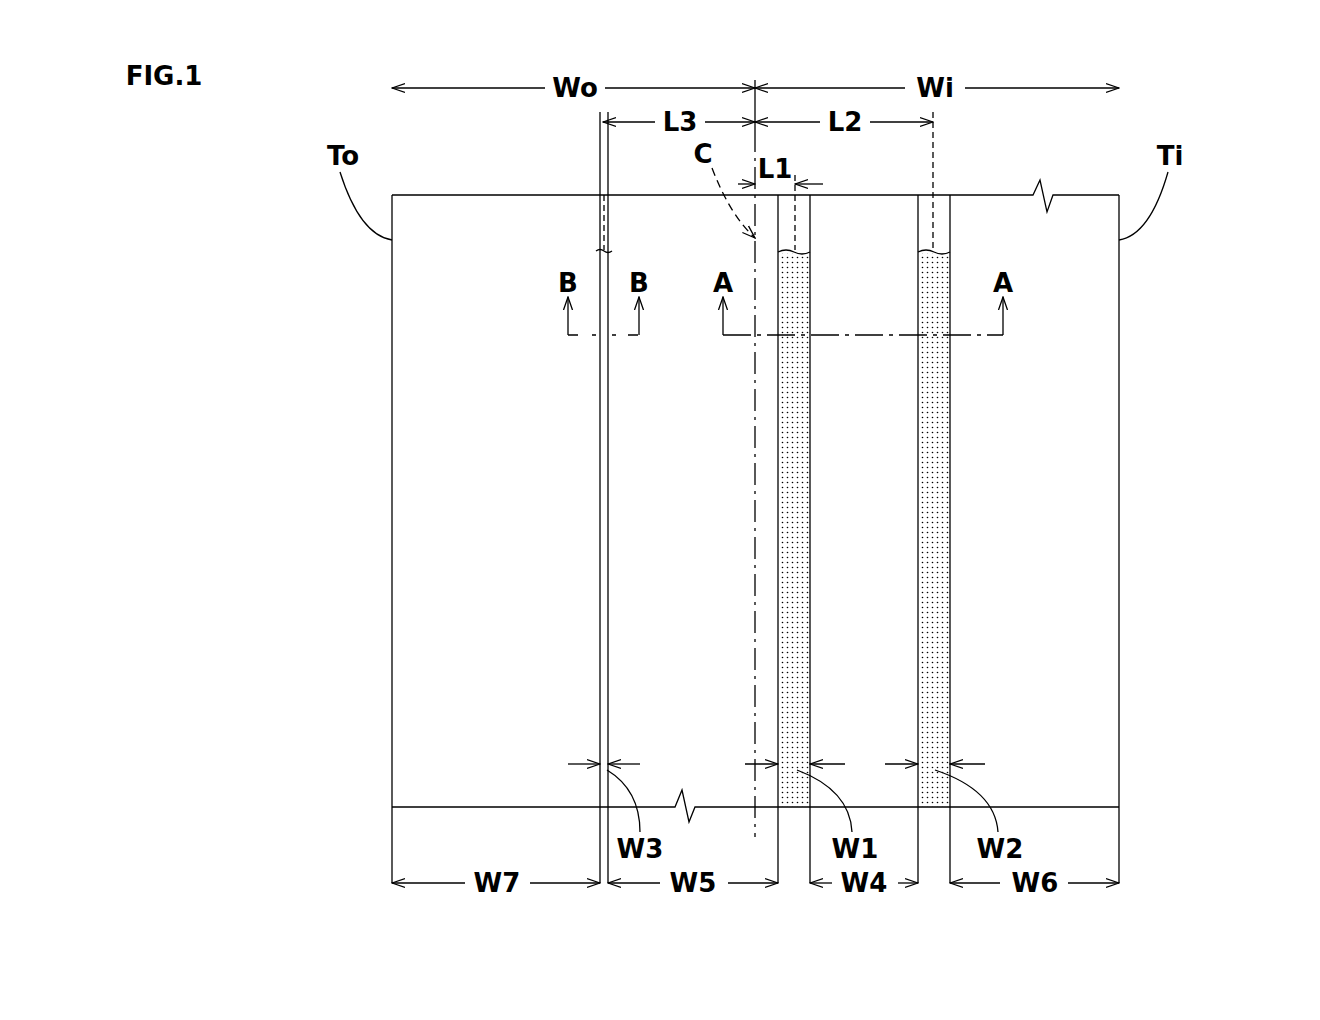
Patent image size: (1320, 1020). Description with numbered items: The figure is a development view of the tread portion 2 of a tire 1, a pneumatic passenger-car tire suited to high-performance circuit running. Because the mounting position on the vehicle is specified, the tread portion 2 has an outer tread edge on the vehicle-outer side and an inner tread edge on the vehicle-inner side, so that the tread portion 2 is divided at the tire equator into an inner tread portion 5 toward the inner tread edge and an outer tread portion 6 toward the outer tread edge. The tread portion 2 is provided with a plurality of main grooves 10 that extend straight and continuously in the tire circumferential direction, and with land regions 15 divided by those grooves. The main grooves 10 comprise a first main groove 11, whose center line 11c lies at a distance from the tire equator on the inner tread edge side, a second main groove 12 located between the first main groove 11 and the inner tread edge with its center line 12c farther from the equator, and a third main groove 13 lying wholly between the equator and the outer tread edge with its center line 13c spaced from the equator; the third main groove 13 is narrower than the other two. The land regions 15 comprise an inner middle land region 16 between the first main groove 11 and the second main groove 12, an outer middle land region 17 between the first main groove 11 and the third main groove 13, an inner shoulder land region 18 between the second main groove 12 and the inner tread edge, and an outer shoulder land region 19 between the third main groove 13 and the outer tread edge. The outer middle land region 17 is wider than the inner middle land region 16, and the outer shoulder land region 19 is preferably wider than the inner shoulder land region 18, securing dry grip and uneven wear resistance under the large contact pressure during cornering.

The tire 1 is at (1013, 185).
The tread portion 2 is at (500, 185).
The inner tread portion 5 is at (963, 232).
The outer tread portion 6 is at (541, 238).
The main grooves 10 is at (1033, 497).
The first main groove 11 is at (795, 462).
The second main groove 12 is at (933, 492).
The third main groove 13 is at (600, 448).
The center line of the first main groove 11c is at (797, 248).
The center line of the second main groove 12c is at (931, 248).
The center line of the third main groove 13c is at (605, 248).
The land regions 15 is at (757, 637).
The inner middle land region 16 is at (862, 608).
The outer middle land region 17 is at (650, 607).
The inner shoulder land region 18 is at (1033, 577).
The outer shoulder land region 19 is at (478, 577).